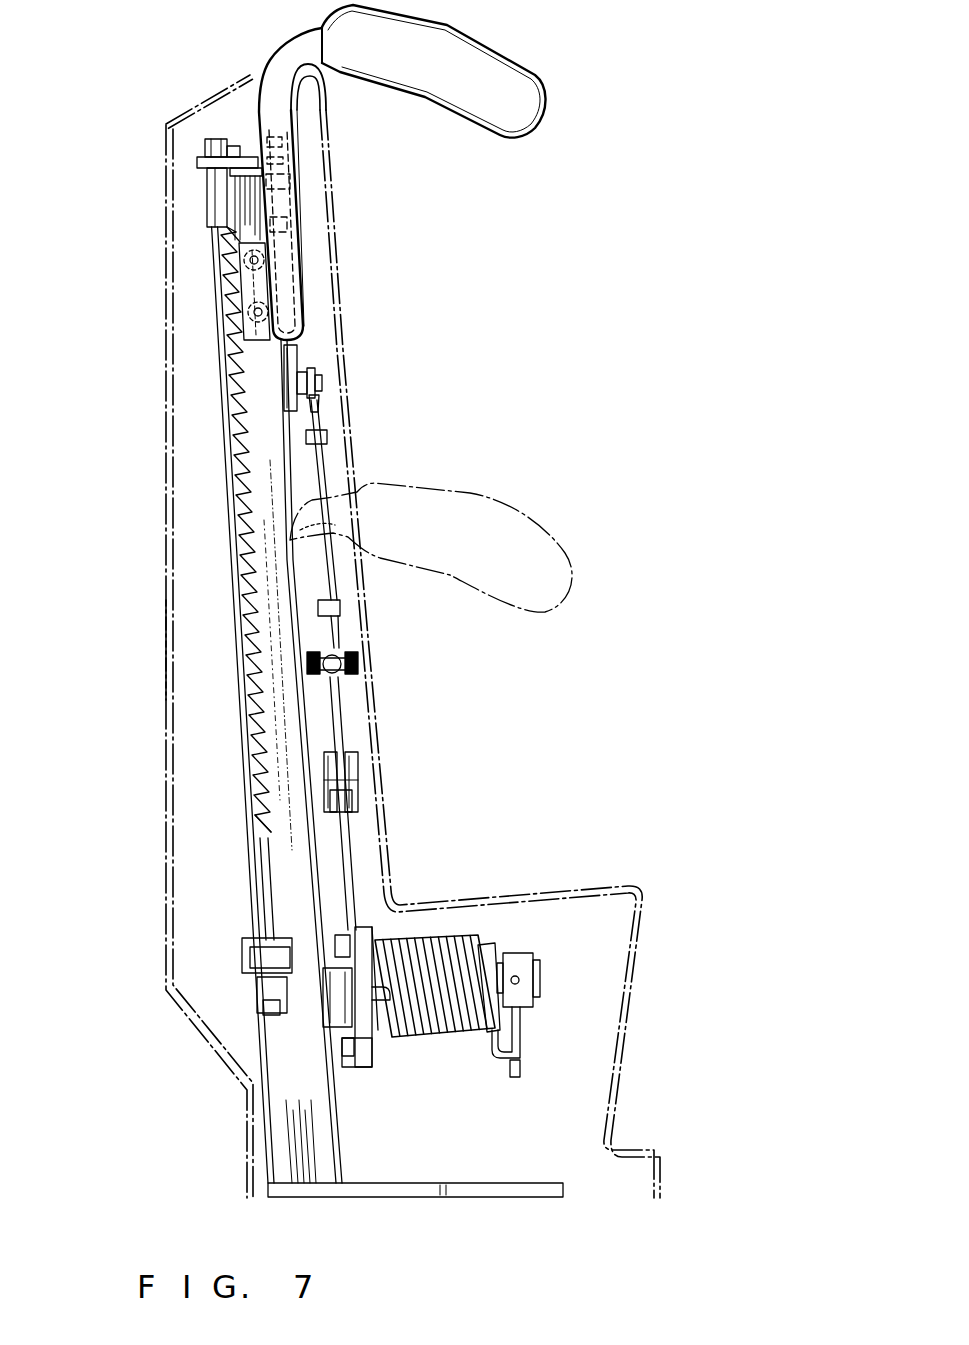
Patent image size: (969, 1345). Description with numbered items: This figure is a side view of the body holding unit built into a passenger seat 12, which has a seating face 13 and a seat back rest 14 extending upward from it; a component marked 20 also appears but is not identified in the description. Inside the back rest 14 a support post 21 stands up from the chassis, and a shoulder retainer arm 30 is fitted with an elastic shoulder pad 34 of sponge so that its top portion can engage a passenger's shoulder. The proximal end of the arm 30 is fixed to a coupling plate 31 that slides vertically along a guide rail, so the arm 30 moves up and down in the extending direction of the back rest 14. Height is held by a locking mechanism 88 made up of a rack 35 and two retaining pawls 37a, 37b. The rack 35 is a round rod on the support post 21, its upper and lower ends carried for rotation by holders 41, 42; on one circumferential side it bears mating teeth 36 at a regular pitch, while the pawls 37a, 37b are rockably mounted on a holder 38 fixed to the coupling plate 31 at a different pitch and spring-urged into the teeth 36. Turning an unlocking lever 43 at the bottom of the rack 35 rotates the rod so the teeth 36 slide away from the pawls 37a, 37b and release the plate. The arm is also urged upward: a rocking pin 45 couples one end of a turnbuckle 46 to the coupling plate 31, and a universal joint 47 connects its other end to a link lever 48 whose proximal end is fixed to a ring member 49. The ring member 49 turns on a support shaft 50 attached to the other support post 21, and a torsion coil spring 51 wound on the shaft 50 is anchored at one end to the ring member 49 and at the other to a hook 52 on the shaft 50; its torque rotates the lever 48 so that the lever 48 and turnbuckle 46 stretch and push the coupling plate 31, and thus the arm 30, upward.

The seat 12 is at (160, 806).
The seating face 13 is at (592, 895).
The seat back rest 14 is at (166, 650).
The armrest 20 is at (468, 318).
The support post 21 is at (318, 1122).
The shoulder retainer arm 30 is at (285, 50).
The coupling plate 31 is at (287, 272).
The elastic shoulder pad 34 is at (496, 57).
The rack 35 is at (218, 203).
The mating teeth 36 is at (237, 277).
The retaining pawl 37a is at (240, 262).
The retaining pawl 37b is at (243, 312).
The holder 38 is at (243, 343).
The holder 41 is at (197, 162).
The holder 42 is at (250, 955).
The unlocking lever 43 is at (262, 1003).
The rocking pin 45 is at (327, 385).
The turnbuckle 46 is at (317, 473).
The universal joint 47 is at (360, 663).
The link lever 48 is at (360, 757).
The ring member 49 is at (372, 938).
The support shaft 50 is at (538, 981).
The torsion coil spring 51 is at (460, 935).
The hook 52 is at (518, 1078).
The locking mechanism 88 is at (200, 365).